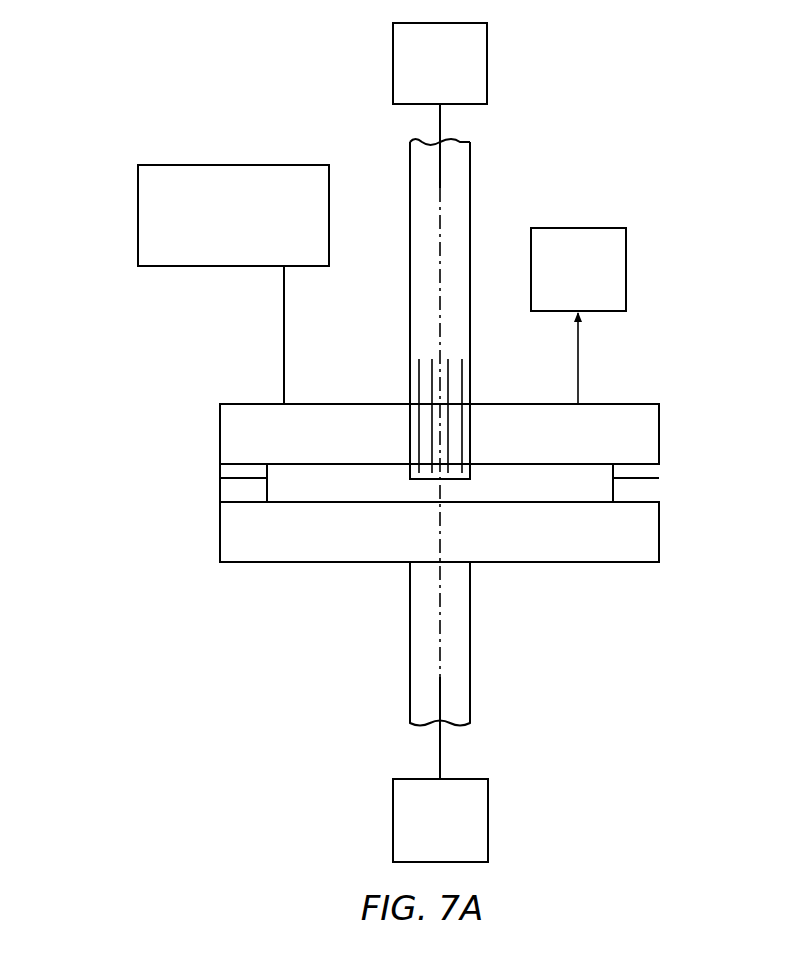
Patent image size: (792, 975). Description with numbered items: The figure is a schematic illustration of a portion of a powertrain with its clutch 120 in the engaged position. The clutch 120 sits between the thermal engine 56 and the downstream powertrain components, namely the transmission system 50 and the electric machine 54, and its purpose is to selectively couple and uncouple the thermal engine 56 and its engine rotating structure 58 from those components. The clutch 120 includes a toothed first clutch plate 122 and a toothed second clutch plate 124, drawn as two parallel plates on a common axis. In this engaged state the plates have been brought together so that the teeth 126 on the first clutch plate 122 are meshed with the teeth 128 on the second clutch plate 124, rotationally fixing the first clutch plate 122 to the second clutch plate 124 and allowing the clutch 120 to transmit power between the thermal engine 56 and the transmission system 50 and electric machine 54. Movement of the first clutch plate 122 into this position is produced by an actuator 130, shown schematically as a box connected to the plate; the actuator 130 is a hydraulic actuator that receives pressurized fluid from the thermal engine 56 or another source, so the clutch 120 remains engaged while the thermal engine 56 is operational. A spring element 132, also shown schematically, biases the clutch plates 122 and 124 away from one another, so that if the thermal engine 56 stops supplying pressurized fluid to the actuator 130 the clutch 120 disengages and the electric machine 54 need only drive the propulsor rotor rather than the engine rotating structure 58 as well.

The clutch 120 is at (425, 543).
The first clutch plate 122 is at (208, 434).
The second clutch plate 124 is at (203, 535).
The teeth 126 is at (220, 472).
The teeth 128 is at (220, 490).
The actuator 130 is at (217, 165).
The spring element 132 is at (560, 285).
The thermal engine 56 is at (440, 63).
The engine rotating structure 58 is at (412, 79).
The transmission system 50 is at (440, 820).
The electric machine 54 is at (412, 835).